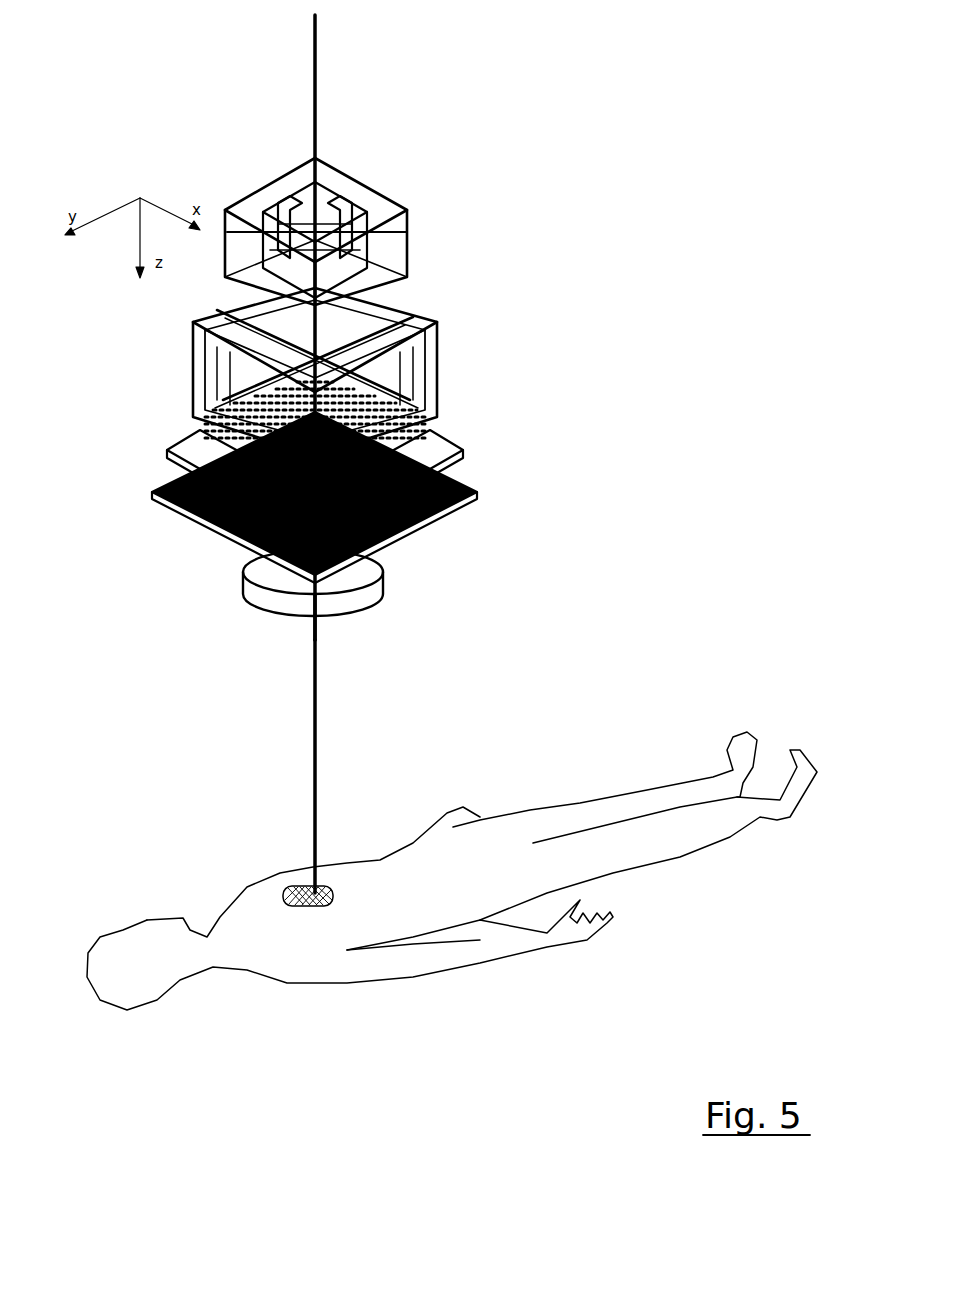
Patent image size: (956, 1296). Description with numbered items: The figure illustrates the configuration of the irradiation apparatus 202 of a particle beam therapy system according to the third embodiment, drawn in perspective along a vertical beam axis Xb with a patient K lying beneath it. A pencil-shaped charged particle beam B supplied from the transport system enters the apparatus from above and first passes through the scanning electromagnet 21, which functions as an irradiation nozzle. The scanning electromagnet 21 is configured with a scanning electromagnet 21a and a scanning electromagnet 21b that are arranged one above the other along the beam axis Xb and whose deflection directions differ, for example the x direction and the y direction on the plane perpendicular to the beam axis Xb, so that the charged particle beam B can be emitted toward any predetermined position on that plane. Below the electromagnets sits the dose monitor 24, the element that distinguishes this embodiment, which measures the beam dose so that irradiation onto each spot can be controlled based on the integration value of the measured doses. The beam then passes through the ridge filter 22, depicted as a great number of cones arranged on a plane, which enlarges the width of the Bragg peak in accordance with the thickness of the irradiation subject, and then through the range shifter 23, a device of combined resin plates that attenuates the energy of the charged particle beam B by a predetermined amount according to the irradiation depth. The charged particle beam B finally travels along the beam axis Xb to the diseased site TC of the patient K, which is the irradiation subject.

The charged particle beam B is at (325, 33).
The irradiation apparatus 202 is at (469, 353).
The scanning electromagnet 21 is at (410, 306).
The scanning electromagnet 21a is at (410, 240).
The scanning electromagnet 21b is at (364, 371).
The dose monitor 24 is at (467, 443).
The ridge filter 22 is at (395, 497).
The range shifter 23 is at (385, 583).
The beam axis Xb is at (313, 770).
The patient K is at (530, 810).
The diseased site TC is at (287, 893).